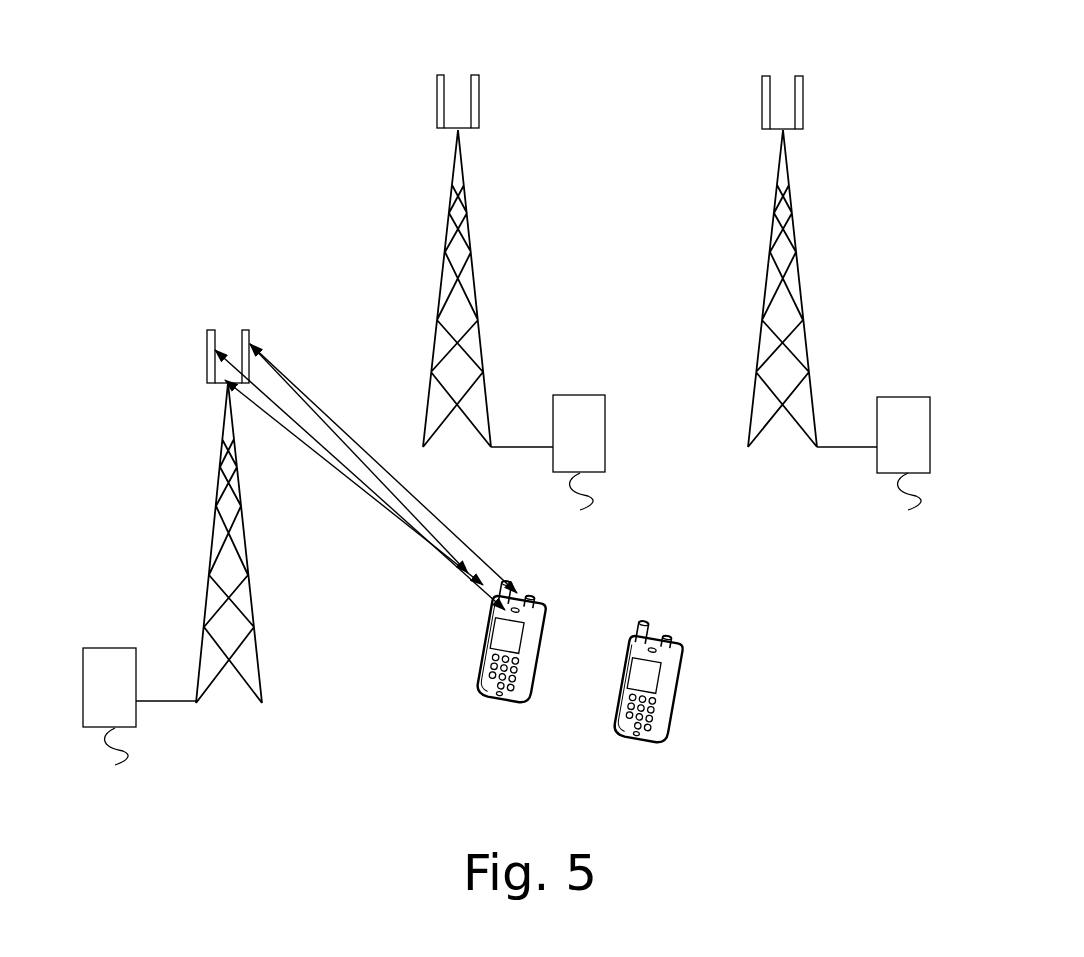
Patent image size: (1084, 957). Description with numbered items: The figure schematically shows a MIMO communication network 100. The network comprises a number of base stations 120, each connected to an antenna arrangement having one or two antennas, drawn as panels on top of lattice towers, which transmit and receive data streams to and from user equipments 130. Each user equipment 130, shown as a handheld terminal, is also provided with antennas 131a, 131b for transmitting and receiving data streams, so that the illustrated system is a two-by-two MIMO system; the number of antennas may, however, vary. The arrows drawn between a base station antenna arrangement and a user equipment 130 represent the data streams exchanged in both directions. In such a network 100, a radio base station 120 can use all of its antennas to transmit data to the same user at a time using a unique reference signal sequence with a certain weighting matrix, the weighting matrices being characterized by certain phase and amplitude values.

The MIMO communication network 100 is at (803, 600).
The base station 120 is at (468, 222).
The user equipment 130 is at (672, 727).
The antenna 131a is at (658, 635).
The antenna 131b is at (633, 625).